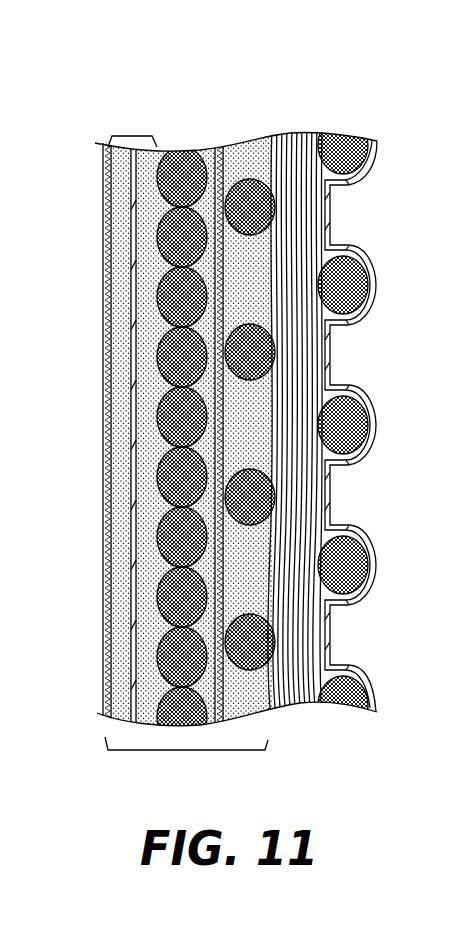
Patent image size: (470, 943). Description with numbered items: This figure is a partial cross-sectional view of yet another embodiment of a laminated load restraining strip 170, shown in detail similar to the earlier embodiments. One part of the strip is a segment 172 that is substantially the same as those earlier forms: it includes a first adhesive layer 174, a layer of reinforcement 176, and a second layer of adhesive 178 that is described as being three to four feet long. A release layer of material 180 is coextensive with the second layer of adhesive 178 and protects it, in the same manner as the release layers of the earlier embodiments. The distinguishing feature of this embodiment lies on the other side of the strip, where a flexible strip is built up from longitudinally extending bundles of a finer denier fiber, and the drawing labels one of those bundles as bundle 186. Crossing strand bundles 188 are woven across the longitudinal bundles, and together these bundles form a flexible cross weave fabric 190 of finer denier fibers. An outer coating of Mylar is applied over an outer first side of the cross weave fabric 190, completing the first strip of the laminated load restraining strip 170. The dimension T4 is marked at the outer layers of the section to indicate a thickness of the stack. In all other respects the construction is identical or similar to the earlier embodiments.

The laminated load restraining strip 170 is at (238, 72).
The segment 172 is at (190, 750).
The first adhesive layer 174 is at (250, 423).
The layer of reinforcement 176 is at (178, 148).
The second layer of adhesive 178 is at (126, 200).
The release layer of material 180 is at (96, 570).
The longitudinally extending bundle 186 is at (245, 165).
The crossing strand bundles 188 is at (292, 703).
The flexible cross weave fabric 190 is at (292, 133).
The thickness T4 is at (133, 136).